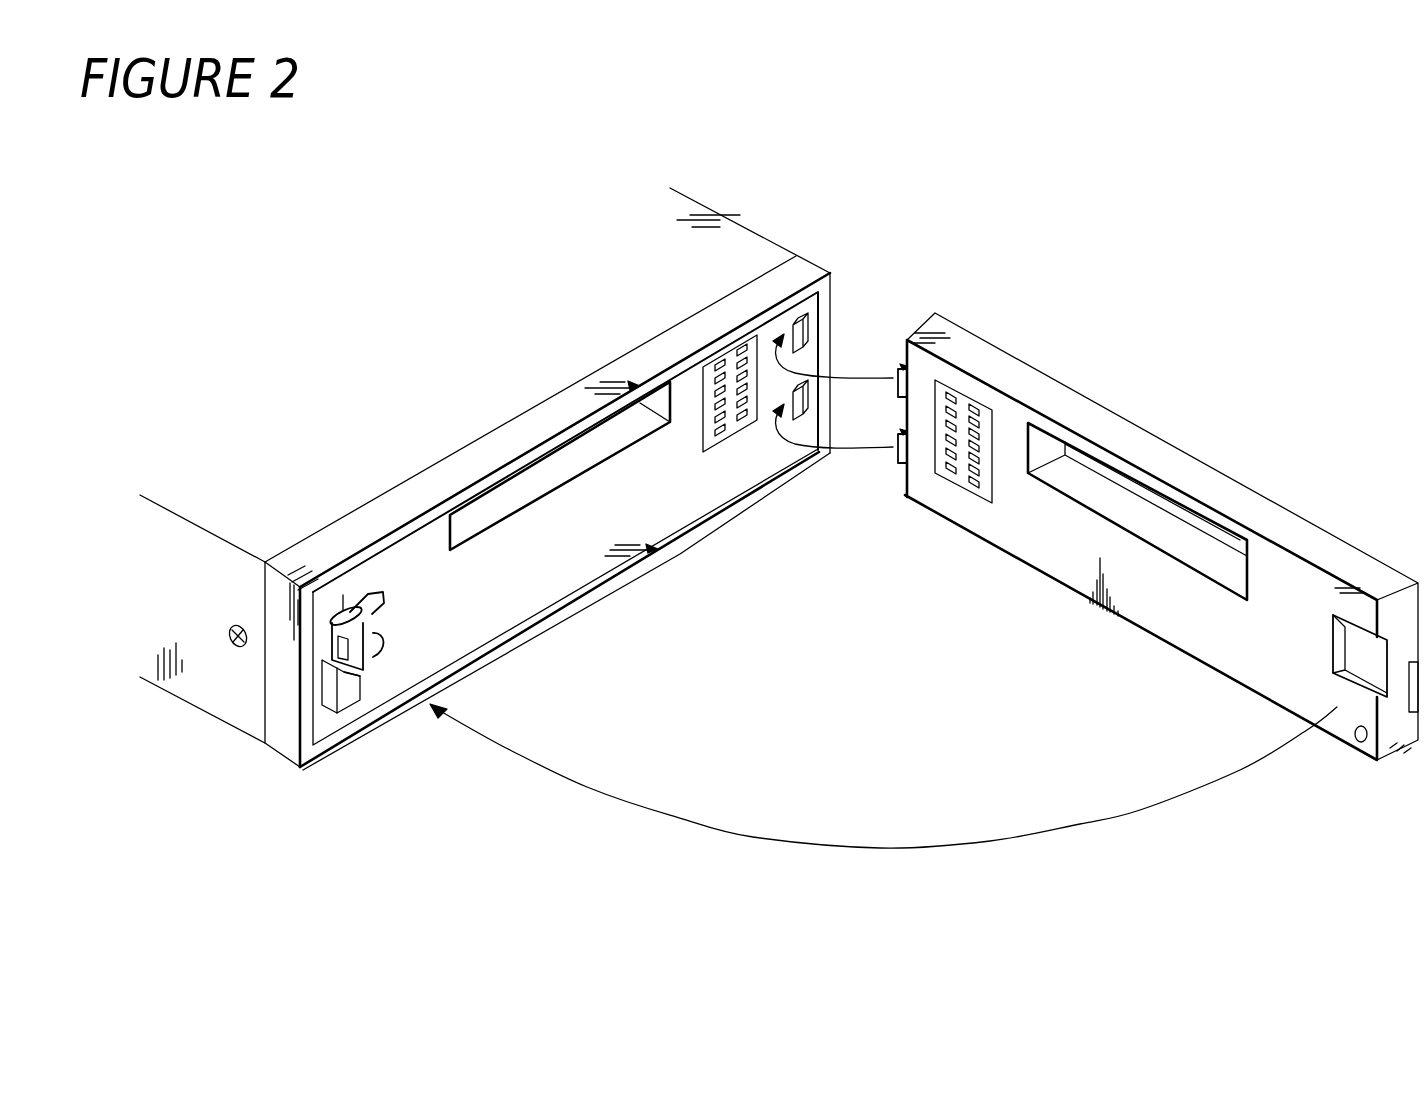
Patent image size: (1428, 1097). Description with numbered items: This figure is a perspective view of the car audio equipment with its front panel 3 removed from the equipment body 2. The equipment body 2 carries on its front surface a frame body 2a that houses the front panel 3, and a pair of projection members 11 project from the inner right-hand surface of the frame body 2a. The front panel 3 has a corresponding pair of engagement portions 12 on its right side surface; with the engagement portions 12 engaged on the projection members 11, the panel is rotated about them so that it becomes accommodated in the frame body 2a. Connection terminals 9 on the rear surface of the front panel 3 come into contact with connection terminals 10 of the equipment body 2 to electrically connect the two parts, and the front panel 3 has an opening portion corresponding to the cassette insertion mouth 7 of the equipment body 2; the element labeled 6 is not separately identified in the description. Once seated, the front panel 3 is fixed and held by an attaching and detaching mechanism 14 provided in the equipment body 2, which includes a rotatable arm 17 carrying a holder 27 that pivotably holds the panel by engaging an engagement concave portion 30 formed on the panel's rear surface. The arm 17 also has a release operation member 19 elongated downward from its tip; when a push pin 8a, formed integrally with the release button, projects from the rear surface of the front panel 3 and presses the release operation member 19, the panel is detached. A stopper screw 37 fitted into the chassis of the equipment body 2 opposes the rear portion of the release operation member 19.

The equipment body 2 is at (748, 228).
The frame body 2a is at (597, 565).
The front panel 3 is at (1237, 480).
The opening in front face 6 is at (558, 465).
The cassette insertion mouth 7 is at (1171, 500).
The push pin 8a is at (1359, 742).
The connection terminals 9 is at (980, 407).
The connection terminals 10 is at (718, 432).
The projection members 11 is at (793, 333).
The engagement portions 12 is at (896, 378).
The attaching and detaching mechanism 14 is at (396, 609).
The arm 17 is at (343, 605).
The release operation member 19 is at (340, 698).
The holder 27 is at (374, 652).
The engagement concave portion 30 is at (1347, 640).
The stopper screw 37 is at (237, 650).